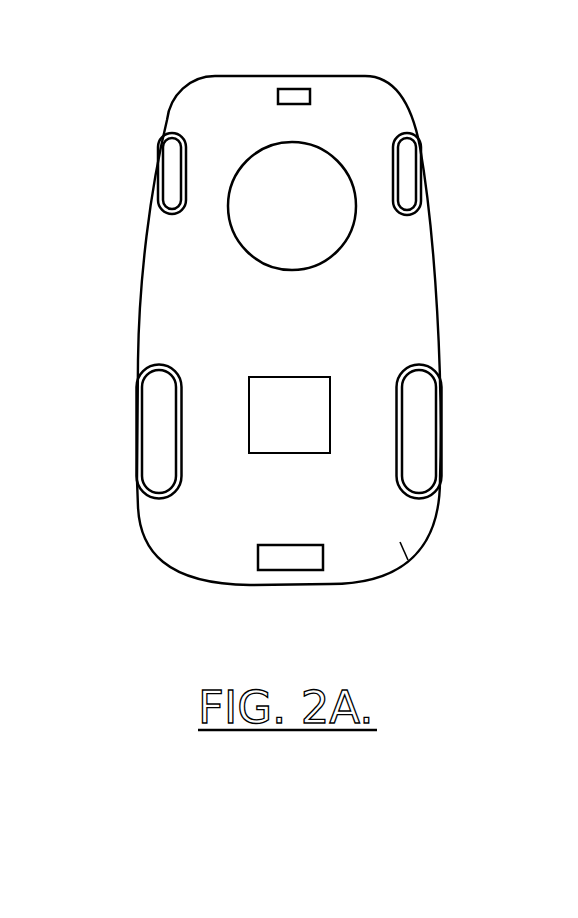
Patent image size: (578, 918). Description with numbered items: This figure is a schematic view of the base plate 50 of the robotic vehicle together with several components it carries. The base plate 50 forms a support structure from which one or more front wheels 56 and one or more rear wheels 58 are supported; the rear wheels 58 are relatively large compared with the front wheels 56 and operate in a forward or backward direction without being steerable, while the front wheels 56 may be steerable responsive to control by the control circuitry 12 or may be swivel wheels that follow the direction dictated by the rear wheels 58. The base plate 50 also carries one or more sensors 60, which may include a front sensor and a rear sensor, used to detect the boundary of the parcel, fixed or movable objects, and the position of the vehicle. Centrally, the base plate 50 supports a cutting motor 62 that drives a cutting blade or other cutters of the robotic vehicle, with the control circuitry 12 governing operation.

The control circuitry 12 is at (283, 405).
The base plate 50 is at (177, 320).
The front wheels 56 is at (170, 162).
The rear wheels 58 is at (163, 422).
The sensors 60 is at (282, 92).
The cutting motor 62 is at (290, 176).